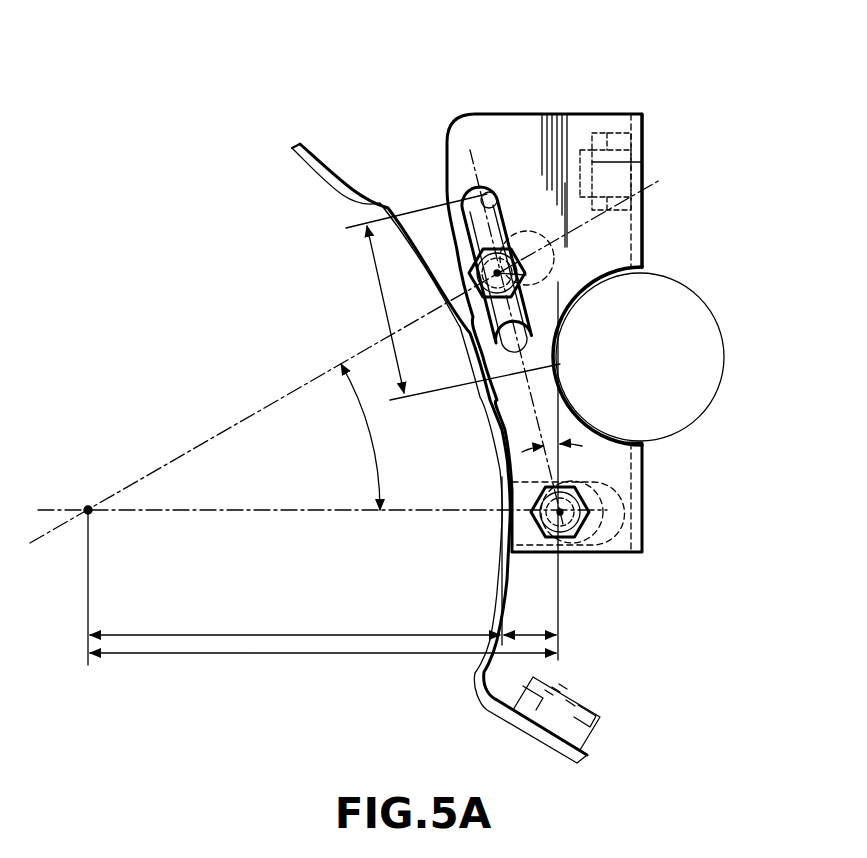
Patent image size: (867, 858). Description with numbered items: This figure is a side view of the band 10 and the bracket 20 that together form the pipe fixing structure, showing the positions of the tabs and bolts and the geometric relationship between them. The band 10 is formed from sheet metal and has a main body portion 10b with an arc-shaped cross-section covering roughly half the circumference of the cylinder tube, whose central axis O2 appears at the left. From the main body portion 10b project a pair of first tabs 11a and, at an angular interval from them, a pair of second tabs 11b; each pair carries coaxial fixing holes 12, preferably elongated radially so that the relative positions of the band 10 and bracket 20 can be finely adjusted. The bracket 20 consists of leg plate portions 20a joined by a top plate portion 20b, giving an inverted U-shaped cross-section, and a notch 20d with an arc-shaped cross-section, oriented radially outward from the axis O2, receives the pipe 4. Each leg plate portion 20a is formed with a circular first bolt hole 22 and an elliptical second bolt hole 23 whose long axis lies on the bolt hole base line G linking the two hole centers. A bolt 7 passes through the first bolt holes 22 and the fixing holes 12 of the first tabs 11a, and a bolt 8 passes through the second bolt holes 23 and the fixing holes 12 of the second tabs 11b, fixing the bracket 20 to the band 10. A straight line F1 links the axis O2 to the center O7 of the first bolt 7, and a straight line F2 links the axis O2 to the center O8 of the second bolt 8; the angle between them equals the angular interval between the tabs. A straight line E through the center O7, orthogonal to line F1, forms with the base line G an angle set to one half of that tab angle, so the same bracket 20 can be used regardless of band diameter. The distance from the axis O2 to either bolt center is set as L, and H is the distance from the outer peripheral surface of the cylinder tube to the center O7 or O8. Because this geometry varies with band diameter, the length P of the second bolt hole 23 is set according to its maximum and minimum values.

The pipe 4 is at (667, 441).
The bolt 7 is at (570, 540).
The bolt 8 is at (430, 266).
The band 10 is at (347, 165).
The main body portion 10b is at (377, 195).
The first tabs 11a is at (610, 482).
The second tabs 11b is at (474, 262).
The fixing holes 12 is at (520, 236).
The bracket 20 is at (457, 113).
The leg plate portions 20a is at (483, 127).
The top plate portion 20b is at (643, 133).
The notch 20d is at (573, 308).
The first bolt hole 22 is at (630, 557).
The second bolt hole 23 is at (490, 193).
The straight line E is at (556, 348).
The bolt hole base line G is at (540, 396).
The central axis O2 is at (88, 514).
The center O7 is at (562, 512).
The center O8 is at (517, 278).
The straight line F1 is at (220, 512).
The straight line F2 is at (233, 427).
The length P is at (453, 297).
The distance L is at (323, 669).
The distance H is at (530, 621).